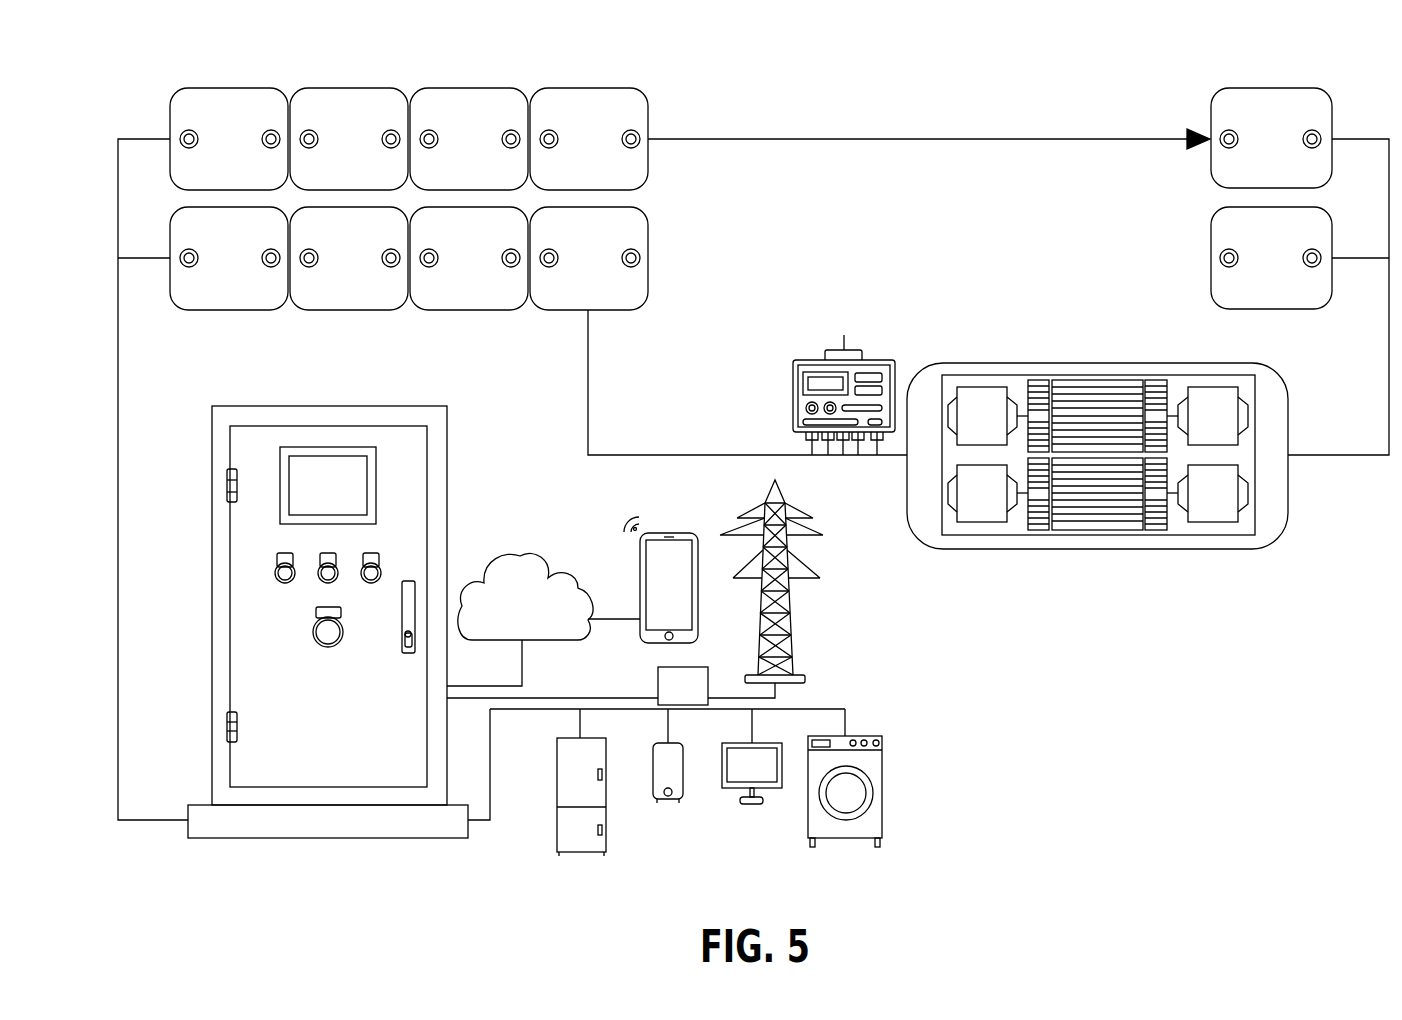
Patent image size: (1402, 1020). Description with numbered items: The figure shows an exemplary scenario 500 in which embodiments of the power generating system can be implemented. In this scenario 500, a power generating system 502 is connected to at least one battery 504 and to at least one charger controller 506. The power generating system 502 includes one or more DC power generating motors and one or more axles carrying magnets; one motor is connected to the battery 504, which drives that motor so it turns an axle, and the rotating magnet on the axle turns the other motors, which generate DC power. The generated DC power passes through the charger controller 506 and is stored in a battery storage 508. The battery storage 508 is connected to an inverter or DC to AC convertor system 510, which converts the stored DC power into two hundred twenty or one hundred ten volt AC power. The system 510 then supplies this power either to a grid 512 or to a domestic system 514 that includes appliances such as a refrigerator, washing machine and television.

The exemplary scenario 500 is at (112, 58).
The power generating system 502 is at (1270, 378).
The battery 504 is at (1320, 243).
The charger controller 506 is at (875, 360).
The battery storage 508 is at (243, 105).
The DC to AC convertor system 510 is at (355, 406).
The grid 512 is at (813, 577).
The domestic system 514 is at (770, 873).